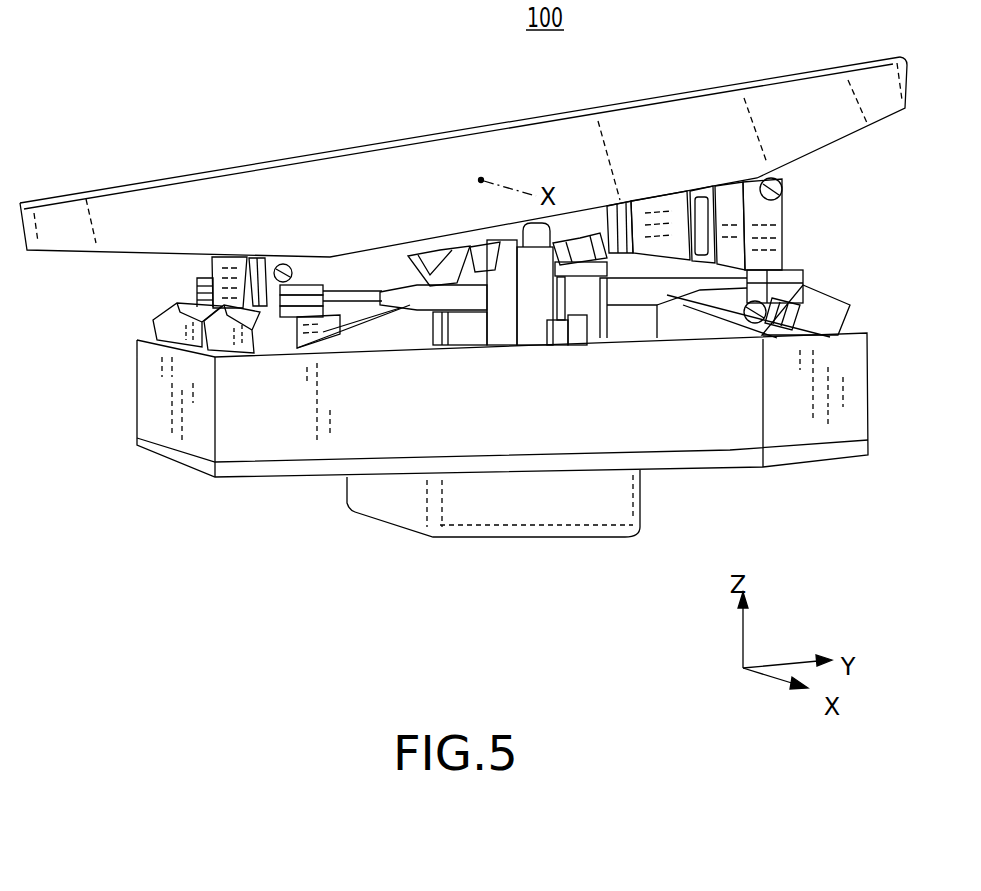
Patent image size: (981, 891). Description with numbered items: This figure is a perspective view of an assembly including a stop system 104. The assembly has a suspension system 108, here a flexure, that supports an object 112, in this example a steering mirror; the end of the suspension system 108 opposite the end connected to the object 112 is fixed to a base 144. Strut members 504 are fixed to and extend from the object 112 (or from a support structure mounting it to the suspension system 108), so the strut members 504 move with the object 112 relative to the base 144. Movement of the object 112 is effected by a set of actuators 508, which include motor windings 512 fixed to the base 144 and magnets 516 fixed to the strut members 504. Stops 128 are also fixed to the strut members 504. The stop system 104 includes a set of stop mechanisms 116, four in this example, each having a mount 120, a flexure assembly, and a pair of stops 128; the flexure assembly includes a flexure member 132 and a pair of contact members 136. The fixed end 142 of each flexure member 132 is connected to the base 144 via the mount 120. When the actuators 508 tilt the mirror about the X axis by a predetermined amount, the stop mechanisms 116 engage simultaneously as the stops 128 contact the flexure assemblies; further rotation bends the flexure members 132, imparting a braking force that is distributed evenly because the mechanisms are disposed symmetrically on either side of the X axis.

The stop system 104 is at (818, 241).
The suspension system 108 is at (460, 247).
The object 112 is at (208, 187).
The stop mechanism 116 is at (298, 338).
The mount 120 is at (458, 327).
The stop 128 is at (277, 272).
The flexure member 132 is at (738, 272).
The contact member 136 is at (306, 282).
The fixed end 142 is at (472, 300).
The base 144 is at (200, 430).
The strut member 504 is at (324, 268).
The actuator 508 is at (132, 316).
The motor winding 512 is at (180, 297).
The magnet 516 is at (256, 282).